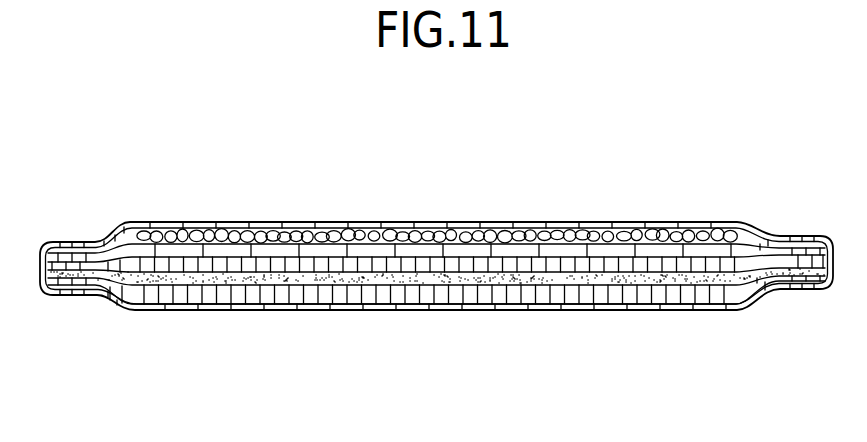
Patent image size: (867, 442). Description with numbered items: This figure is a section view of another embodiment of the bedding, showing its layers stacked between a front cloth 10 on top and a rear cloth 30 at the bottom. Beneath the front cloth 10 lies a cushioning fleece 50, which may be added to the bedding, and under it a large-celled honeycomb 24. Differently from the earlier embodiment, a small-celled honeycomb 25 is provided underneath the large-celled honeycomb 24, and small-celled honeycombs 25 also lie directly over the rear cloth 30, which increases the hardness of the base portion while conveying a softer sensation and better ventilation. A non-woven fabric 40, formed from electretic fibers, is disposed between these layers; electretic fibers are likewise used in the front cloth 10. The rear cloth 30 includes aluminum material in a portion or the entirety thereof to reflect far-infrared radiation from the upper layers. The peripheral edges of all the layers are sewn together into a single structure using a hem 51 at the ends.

The front cloth 10 is at (286, 223).
The rear cloth 30 is at (398, 306).
The cushioning fleece 50 is at (402, 232).
The large-celled honeycomb 24 is at (493, 248).
The small-celled honeycomb 25 is at (593, 262).
The non-woven fabric 40 is at (651, 278).
The hem 51 is at (799, 237).